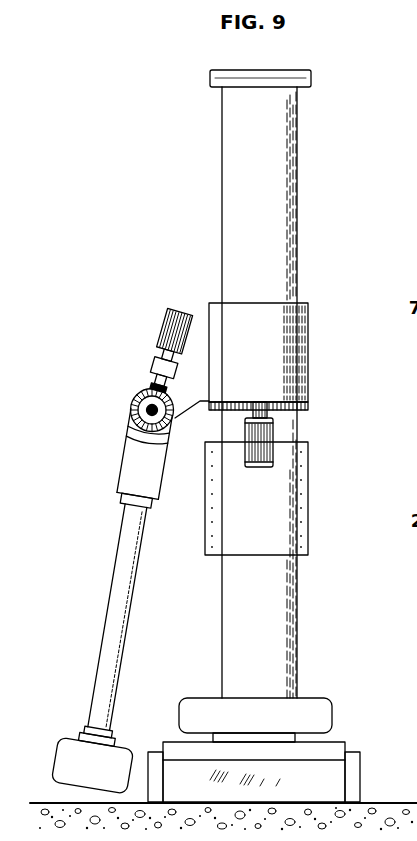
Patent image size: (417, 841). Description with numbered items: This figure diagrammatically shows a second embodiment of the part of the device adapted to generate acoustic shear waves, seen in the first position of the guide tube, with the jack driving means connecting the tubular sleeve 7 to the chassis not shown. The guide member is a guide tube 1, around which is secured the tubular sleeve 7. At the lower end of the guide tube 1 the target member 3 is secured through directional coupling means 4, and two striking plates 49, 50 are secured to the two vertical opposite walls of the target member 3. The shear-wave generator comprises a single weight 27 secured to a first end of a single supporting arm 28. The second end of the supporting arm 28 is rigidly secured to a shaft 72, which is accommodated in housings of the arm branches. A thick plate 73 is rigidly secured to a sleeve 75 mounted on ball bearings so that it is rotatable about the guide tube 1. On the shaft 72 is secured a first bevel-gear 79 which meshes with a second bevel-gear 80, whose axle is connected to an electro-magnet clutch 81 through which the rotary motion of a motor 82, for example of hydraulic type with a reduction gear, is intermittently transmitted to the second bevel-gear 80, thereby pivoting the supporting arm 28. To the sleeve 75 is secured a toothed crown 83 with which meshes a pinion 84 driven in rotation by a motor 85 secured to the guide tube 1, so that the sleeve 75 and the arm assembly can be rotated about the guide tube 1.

The guide tube 1 is at (222, 170).
The target member 3 is at (328, 752).
The directional coupling means 4 is at (335, 699).
The tubular sleeve 7 is at (205, 510).
The single weight 27 is at (68, 767).
The single supporting arm 28 is at (103, 660).
The striking plate 49 is at (353, 782).
The striking plate 50 is at (155, 757).
The shaft 72 is at (147, 412).
The thick plate 73 is at (204, 322).
The sleeve 75 is at (293, 353).
The first bevel-gear 79 is at (131, 405).
The second bevel-gear 80 is at (157, 386).
The electro-magnet clutch 81 is at (158, 364).
The motor 82 is at (168, 334).
The toothed crown 83 is at (309, 405).
The pinion 84 is at (268, 414).
The motor 85 is at (274, 445).